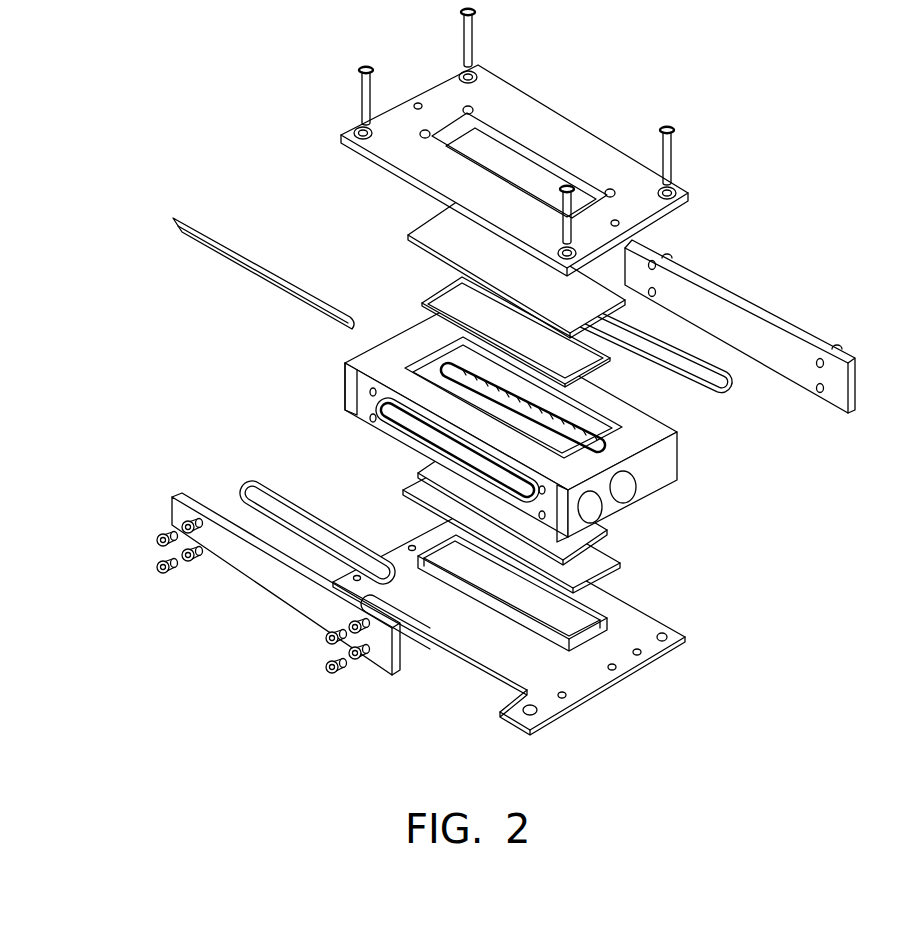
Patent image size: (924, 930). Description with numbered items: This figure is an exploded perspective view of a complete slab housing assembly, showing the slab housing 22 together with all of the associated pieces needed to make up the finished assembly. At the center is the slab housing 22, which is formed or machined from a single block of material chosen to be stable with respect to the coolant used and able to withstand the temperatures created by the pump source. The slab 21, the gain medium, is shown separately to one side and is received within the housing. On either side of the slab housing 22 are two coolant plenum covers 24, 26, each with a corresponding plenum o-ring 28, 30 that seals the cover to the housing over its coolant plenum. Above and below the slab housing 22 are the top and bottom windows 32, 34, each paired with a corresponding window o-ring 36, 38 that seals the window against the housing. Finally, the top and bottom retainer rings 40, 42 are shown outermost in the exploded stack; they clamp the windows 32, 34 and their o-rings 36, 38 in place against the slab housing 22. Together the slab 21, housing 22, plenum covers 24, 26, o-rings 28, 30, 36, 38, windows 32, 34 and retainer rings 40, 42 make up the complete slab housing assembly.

The slab 21 is at (228, 268).
The slab housing 22 is at (663, 488).
The coolant plenum cover 24 is at (288, 612).
The coolant plenum cover 26 is at (740, 300).
The plenum o-ring 28 is at (248, 480).
The plenum o-ring 30 is at (727, 397).
The top window 32 is at (428, 222).
The bottom window 34 is at (405, 488).
The window o-ring 36 is at (437, 288).
The window o-ring 38 is at (607, 540).
The top retainer ring 40 is at (560, 117).
The bottom retainer ring 42 is at (610, 688).